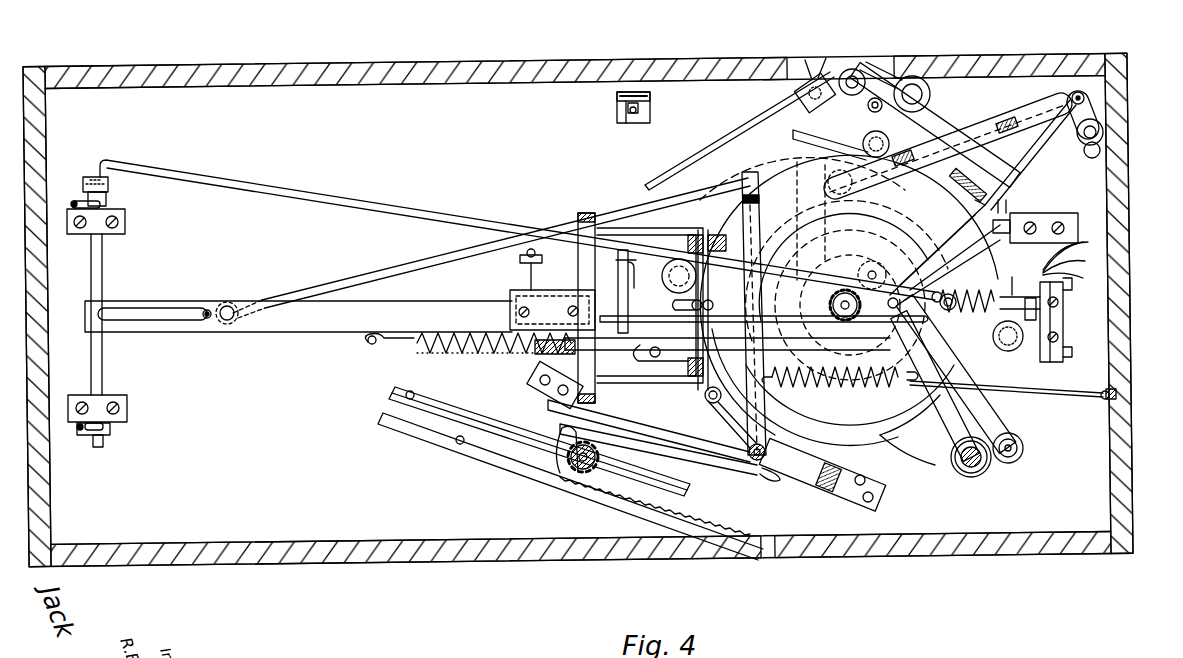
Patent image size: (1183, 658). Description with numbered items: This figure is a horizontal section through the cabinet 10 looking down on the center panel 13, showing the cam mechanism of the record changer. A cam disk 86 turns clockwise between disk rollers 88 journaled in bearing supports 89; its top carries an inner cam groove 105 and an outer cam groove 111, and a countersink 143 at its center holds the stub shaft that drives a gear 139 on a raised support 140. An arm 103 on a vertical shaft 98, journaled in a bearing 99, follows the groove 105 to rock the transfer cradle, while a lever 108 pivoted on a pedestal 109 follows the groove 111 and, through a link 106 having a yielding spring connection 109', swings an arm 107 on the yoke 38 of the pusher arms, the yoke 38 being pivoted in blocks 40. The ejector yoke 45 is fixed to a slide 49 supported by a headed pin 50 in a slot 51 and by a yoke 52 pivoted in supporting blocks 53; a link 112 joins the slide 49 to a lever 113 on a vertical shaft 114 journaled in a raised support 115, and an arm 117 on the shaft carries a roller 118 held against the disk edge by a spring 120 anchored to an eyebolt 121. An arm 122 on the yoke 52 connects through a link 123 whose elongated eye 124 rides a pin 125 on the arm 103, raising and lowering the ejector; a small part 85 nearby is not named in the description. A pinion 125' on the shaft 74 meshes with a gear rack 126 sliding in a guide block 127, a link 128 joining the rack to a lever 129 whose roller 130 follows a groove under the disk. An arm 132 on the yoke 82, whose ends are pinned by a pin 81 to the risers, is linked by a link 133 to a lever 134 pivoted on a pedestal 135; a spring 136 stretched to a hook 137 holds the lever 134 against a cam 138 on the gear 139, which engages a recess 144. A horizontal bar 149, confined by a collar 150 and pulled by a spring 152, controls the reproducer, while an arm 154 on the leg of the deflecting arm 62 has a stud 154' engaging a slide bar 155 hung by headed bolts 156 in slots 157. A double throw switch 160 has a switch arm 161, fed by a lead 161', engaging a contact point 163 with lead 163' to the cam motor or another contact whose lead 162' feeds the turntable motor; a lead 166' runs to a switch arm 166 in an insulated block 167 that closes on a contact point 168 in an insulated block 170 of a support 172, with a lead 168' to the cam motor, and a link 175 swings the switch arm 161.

The cabinet 10 is at (545, 62).
The center panel 13 is at (367, 561).
The yoke 38 is at (82, 435).
The blocks 40 is at (126, 214).
The yoke 45 is at (579, 280).
The slide 49 is at (305, 325).
The headed pin 50 is at (208, 310).
The slot 51 is at (188, 305).
The yoke 52 is at (640, 228).
The supporting blocks 53 is at (711, 234).
The deflecting arm 62 is at (1092, 157).
The shaft 74 is at (598, 462).
The pin 81 is at (518, 280).
The yoke 82 is at (534, 358).
The cam disk 85 is at (633, 306).
The cam disk 86 is at (912, 461).
The disk rollers 88 is at (865, 142).
The bearing supports 89 is at (795, 130).
The vertical shaft 98 is at (971, 477).
The bearing 99 is at (965, 478).
The arm 103 is at (952, 443).
The inner cam groove 105 is at (778, 190).
The link 106 is at (304, 192).
The arm 107 is at (87, 177).
The lever 108 is at (1006, 413).
The pedestal 109 is at (1032, 448).
The yielding spring connection 109' is at (1028, 273).
The outer cam groove 111 is at (894, 406).
The link 112 is at (409, 270).
The lever 113 is at (744, 179).
The vertical shaft 114 is at (756, 470).
The raised support 115 is at (718, 458).
The arm 117 is at (710, 415).
The roller 118 is at (715, 405).
The spring 120 is at (863, 398).
The eyebolt 121 is at (1113, 389).
The arm 122 is at (699, 310).
The link 123 is at (890, 350).
The elongated eye 124 is at (928, 398).
The pin 125 is at (964, 280).
The pinion 125' is at (546, 481).
The gear rack 126 is at (746, 553).
The guide block 127 is at (415, 427).
The link 128 is at (565, 429).
The lever 129 is at (793, 489).
The roller 130 is at (814, 221).
The arm 132 is at (684, 316).
The link 133 is at (682, 348).
The lever 134 is at (908, 212).
The pedestal 135 is at (931, 92).
The spring 136 is at (425, 348).
The hook 137 is at (365, 342).
The cam 138 is at (874, 271).
The gear 139 is at (837, 172).
The raised support 140 is at (1013, 215).
The countersink 143 is at (813, 343).
The recess 144 is at (925, 245).
The horizontal bar 149 is at (940, 121).
The collar 150 is at (890, 58).
The spring 152 is at (902, 65).
The arm 154 is at (1116, 116).
The stud 154' is at (1121, 90).
The horizontal slide bar 155 is at (1027, 112).
The headed bolts 156 is at (1048, 140).
The slots 157 is at (985, 148).
The double throw electric switch 160 is at (1060, 303).
The switch arm 161 is at (1077, 263).
The lead 161' is at (1078, 322).
The lead wire 162' is at (1106, 282).
The contact point 163 is at (1077, 309).
The lead 163' is at (1106, 252).
The switch arm 166 is at (739, 131).
The lead 166' is at (1004, 153).
The insulated block 167 is at (825, 48).
The contact point 168 is at (592, 123).
The lead 168' is at (593, 99).
The insulated block 170 is at (650, 97).
The support 172 is at (650, 118).
The link 175 is at (1028, 296).